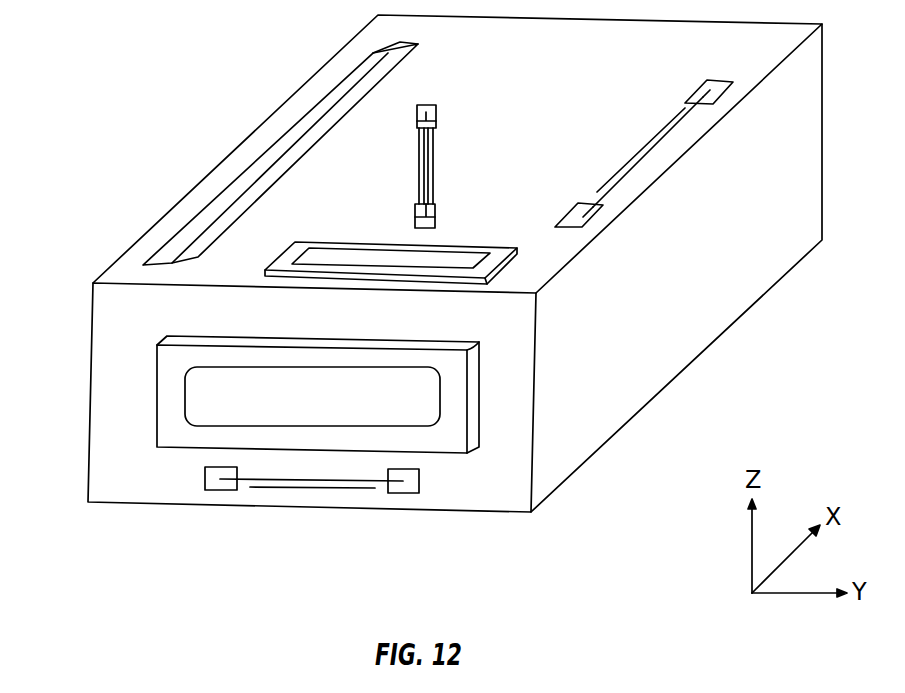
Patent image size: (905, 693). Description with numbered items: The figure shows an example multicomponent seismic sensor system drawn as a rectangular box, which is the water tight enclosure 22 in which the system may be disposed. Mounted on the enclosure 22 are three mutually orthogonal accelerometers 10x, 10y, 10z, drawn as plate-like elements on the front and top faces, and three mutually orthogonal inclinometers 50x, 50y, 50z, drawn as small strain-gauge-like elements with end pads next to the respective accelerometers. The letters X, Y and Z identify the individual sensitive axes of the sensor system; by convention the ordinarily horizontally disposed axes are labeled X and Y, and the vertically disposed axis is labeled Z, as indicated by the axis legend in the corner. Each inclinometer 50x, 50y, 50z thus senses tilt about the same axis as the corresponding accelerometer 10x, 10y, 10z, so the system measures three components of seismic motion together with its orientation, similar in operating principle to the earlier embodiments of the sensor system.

The water tight enclosure 22 is at (92, 338).
The accelerometer 10x is at (212, 397).
The accelerometer 10y is at (307, 110).
The accelerometer 10z is at (448, 246).
The inclinometer 50x is at (666, 138).
The inclinometer 50y is at (283, 488).
The inclinometer 50z is at (436, 177).